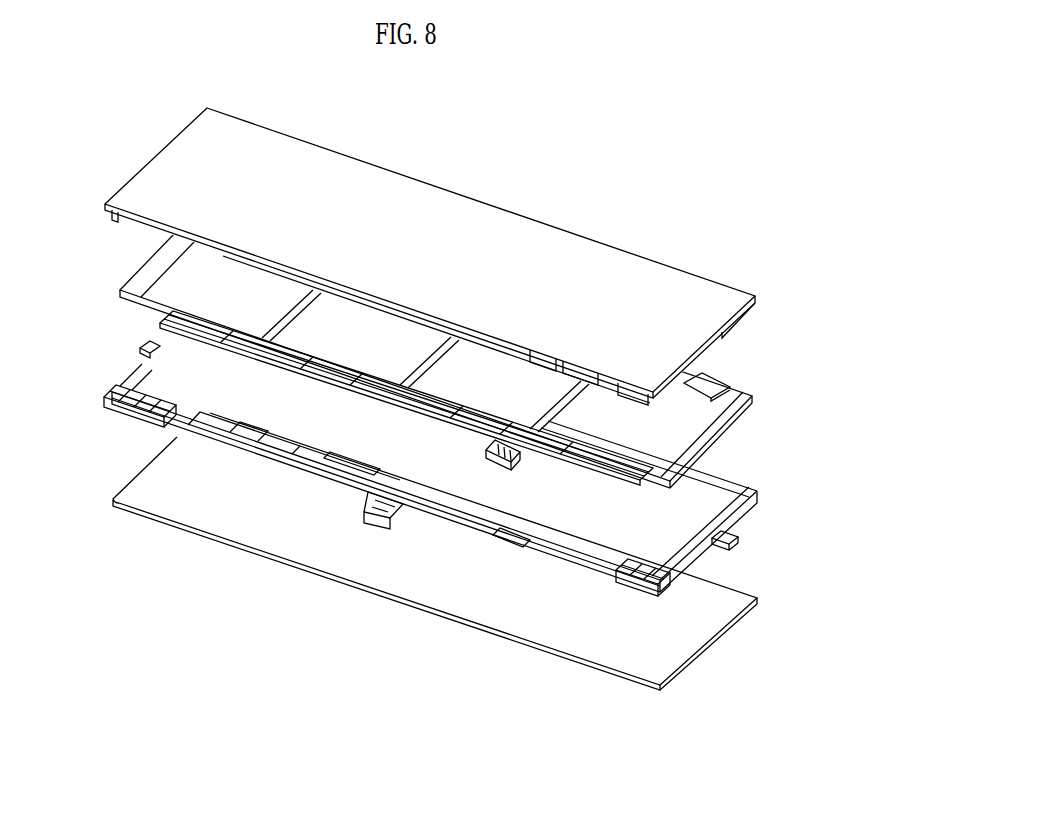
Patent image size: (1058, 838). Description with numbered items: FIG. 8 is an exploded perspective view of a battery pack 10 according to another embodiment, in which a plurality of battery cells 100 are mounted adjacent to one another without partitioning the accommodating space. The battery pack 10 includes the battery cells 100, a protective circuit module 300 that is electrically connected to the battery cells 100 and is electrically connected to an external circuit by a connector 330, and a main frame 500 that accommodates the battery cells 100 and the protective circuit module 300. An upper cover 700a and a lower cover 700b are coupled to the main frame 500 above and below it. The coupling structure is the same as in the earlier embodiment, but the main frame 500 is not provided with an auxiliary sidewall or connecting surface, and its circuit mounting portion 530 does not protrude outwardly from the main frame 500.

The battery pack 10 is at (799, 96).
The upper cover 700a is at (162, 170).
The battery cells 100 is at (523, 402).
The protective circuit module 300 is at (430, 408).
The connector 330 is at (484, 462).
The main frame 500 is at (762, 489).
The circuit mounting portion 530 is at (343, 402).
The lower cover 700b is at (137, 489).